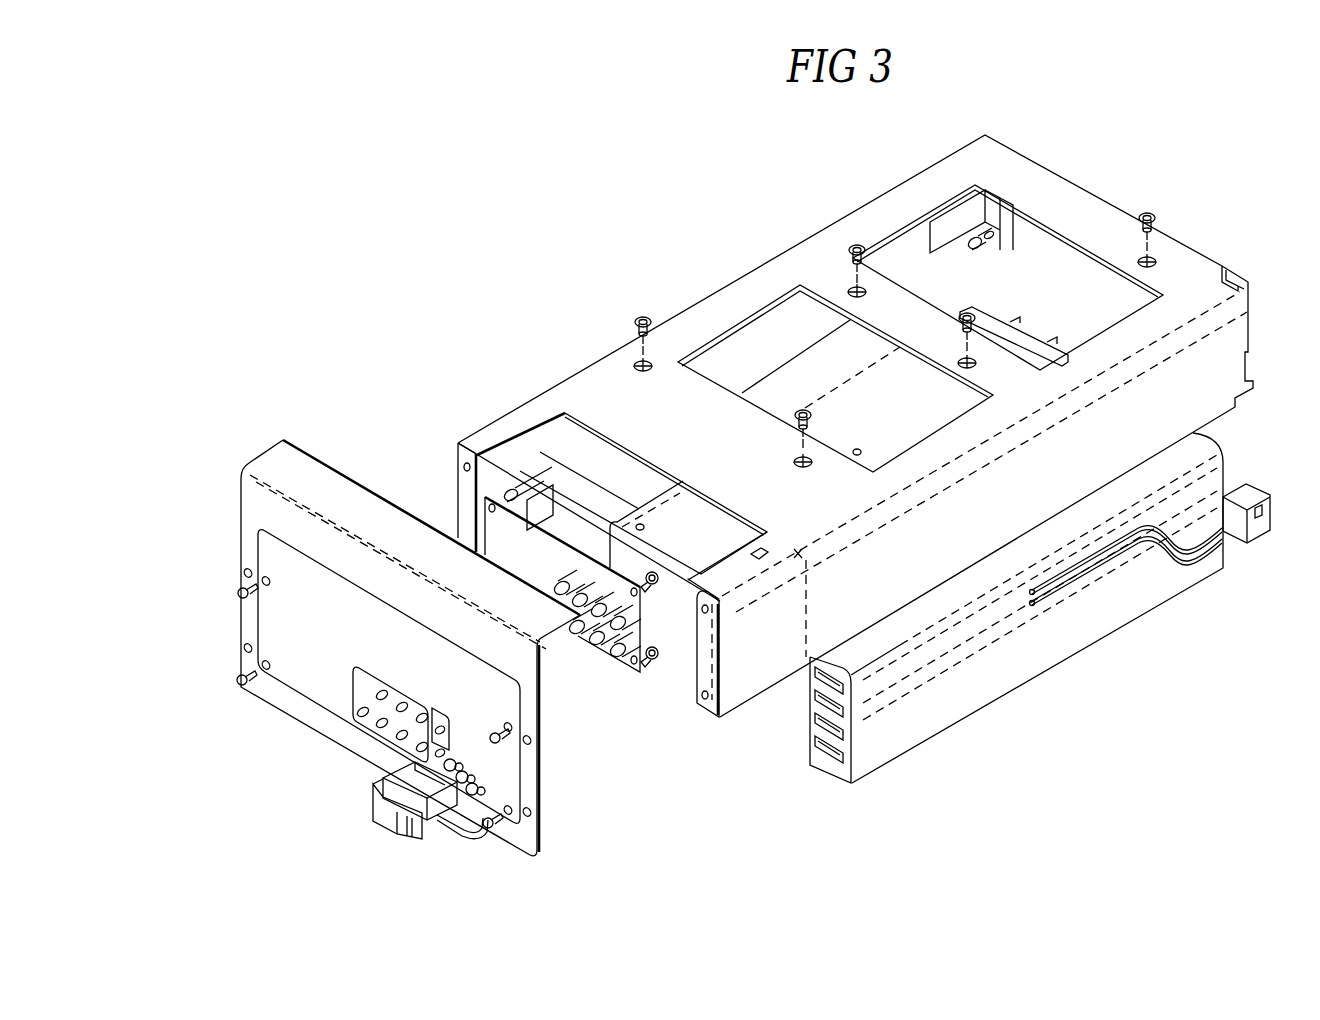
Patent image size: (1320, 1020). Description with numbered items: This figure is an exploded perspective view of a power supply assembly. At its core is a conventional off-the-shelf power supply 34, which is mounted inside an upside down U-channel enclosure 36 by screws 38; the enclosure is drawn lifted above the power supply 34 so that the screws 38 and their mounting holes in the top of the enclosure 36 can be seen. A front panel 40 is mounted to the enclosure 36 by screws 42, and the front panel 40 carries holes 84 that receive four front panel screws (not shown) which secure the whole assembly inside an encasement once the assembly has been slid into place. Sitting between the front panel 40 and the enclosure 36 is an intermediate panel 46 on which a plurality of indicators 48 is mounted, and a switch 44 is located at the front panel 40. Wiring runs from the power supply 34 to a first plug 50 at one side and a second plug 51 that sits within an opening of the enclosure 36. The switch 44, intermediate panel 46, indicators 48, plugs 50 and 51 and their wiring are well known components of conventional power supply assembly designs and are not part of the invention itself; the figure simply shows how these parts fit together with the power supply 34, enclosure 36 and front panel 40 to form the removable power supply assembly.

The power supply 34 is at (913, 710).
The U-channel enclosure 36 is at (820, 273).
The screws 38 is at (643, 313).
The front panel 40 is at (280, 460).
The screws 42 is at (238, 686).
The switch 44 is at (400, 838).
The intermediate panel 46 is at (468, 538).
The indicators 48 is at (613, 662).
The first plug 50 is at (1267, 532).
The second plug 51 is at (1017, 233).
The holes 84 is at (245, 650).